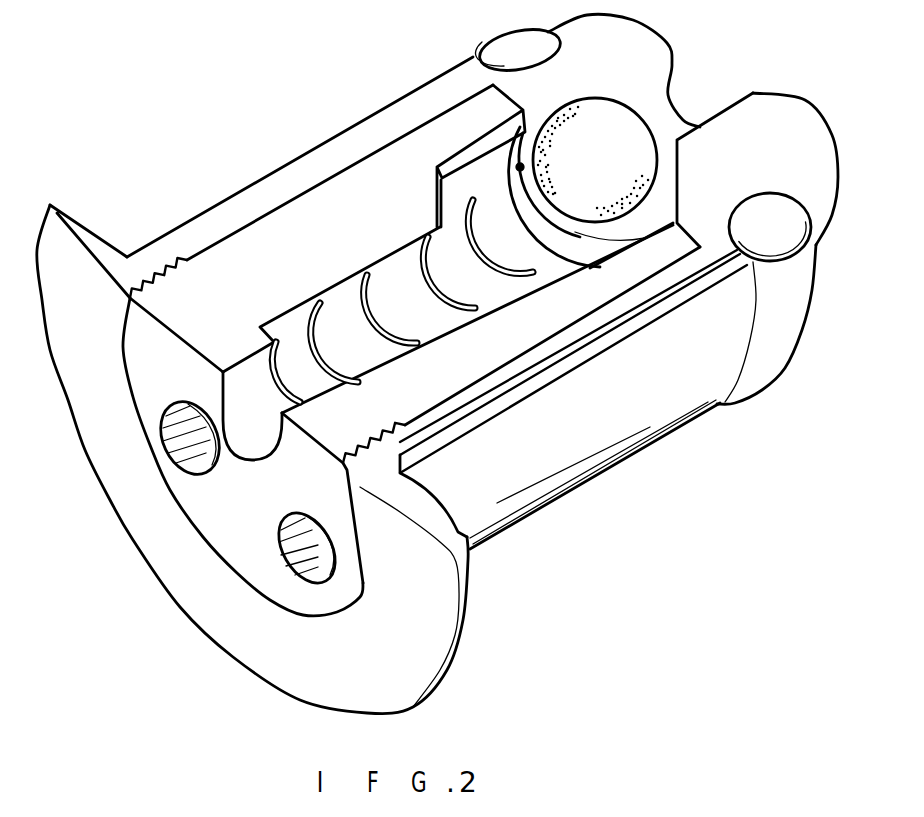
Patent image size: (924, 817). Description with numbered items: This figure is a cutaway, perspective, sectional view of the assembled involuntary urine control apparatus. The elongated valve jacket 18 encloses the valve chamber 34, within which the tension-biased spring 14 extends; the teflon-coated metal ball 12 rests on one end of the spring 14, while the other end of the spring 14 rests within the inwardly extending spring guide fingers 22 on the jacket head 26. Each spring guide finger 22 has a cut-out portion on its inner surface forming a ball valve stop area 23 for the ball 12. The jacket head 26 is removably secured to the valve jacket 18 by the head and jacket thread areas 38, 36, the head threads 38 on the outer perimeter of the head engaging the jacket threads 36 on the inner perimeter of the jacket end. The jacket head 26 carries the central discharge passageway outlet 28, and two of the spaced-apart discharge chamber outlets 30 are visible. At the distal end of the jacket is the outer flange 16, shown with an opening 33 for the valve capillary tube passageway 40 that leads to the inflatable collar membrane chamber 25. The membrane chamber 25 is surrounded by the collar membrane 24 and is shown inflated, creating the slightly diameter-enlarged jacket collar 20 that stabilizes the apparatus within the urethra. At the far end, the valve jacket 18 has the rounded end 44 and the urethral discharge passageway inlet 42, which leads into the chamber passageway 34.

The teflon-coated metal ball 12 is at (573, 176).
The tension-biased spring 14 is at (499, 270).
The outer flange 16 is at (469, 599).
The valve jacket 18 is at (553, 502).
The jacket membrane collar 20 is at (760, 388).
The spring guide fingers 22 is at (490, 138).
The ball valve stop area 23 is at (437, 198).
The collar membrane 24 is at (805, 250).
The collar membrane chamber 25 is at (757, 241).
The jacket head 26 is at (250, 535).
The central discharge outlet 28 is at (265, 435).
The discharge outlets 30 is at (180, 440).
The opening 33 is at (470, 554).
The valve chamber 34 is at (372, 351).
The jacket thread area 36 is at (176, 268).
The head thread area 38 is at (152, 280).
The valve capillary tube passageway 40 is at (610, 325).
The urethral discharge passageway inlet 42 is at (718, 102).
The rounded end 44 is at (813, 127).